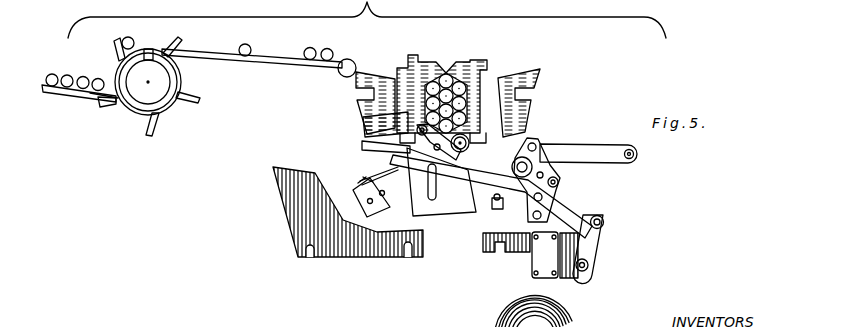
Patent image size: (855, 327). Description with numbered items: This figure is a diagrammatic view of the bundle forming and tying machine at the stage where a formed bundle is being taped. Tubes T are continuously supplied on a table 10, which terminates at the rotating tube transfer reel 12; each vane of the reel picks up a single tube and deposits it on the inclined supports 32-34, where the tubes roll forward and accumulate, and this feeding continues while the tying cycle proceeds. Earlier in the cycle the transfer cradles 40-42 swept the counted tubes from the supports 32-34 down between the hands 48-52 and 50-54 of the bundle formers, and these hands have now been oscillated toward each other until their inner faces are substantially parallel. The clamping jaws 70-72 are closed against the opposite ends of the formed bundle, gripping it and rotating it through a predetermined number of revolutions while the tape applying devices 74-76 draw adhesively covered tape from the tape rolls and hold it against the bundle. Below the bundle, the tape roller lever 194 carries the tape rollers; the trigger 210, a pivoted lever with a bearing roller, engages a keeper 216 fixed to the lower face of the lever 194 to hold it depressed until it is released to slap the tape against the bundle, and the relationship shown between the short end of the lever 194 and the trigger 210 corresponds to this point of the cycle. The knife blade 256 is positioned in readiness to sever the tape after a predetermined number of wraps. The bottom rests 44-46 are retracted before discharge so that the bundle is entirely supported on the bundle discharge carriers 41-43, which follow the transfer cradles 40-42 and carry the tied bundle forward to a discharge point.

The tubes T is at (64, 69).
The table 10 is at (60, 95).
The tube transfer reel 12 is at (152, 92).
The inclined supports 32-34 is at (244, 67).
The hands of the bundle former 48-52 is at (371, 115).
The clamping jaws 70-72 is at (432, 70).
The hands of the bundle former 50-54 is at (525, 105).
The bottom rests 44-46 is at (405, 158).
The tape applying devices 74-76 is at (475, 205).
The tape roller lever 194 is at (563, 203).
The keeper 216 is at (590, 214).
The trigger 210 is at (598, 242).
The bundle discharge carriers 41-43 is at (507, 258).
The transfer cradles 40-42 is at (292, 222).
The knife blade 256 is at (400, 219).